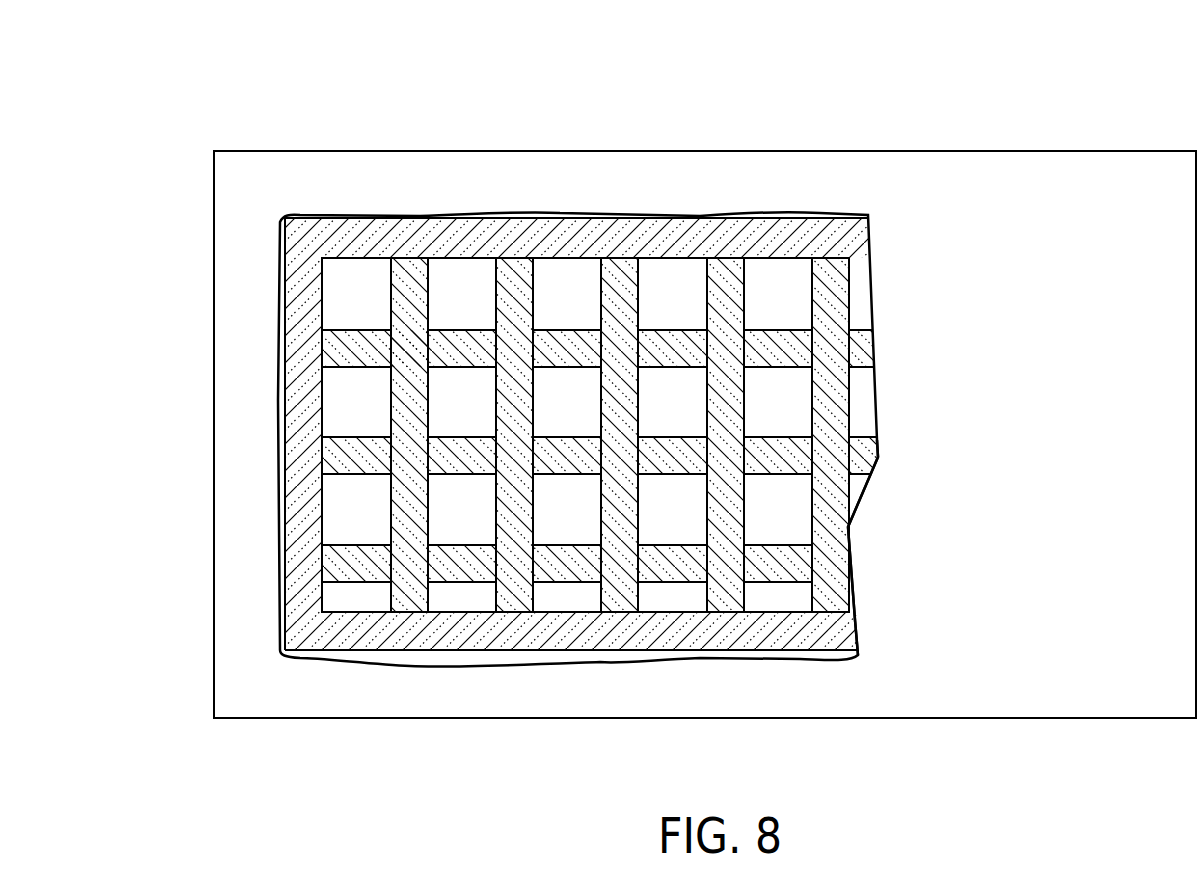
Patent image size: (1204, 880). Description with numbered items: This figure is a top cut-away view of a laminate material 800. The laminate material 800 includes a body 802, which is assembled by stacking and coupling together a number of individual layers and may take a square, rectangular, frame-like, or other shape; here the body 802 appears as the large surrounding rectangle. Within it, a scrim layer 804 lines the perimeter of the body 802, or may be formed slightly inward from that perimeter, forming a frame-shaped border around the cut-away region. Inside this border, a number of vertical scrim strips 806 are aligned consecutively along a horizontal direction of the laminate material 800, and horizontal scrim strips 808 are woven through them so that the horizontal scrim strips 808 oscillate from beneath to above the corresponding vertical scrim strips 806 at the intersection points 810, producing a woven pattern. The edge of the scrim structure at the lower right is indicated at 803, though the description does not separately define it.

The laminate material 800 is at (339, 112).
The body 802 is at (1145, 181).
The edge of structure 803 is at (866, 645).
The scrim layer 804 is at (683, 630).
The vertical scrim strips 806 is at (410, 278).
The horizontal scrim strips 808 is at (355, 342).
The intersection points 810 is at (410, 350).